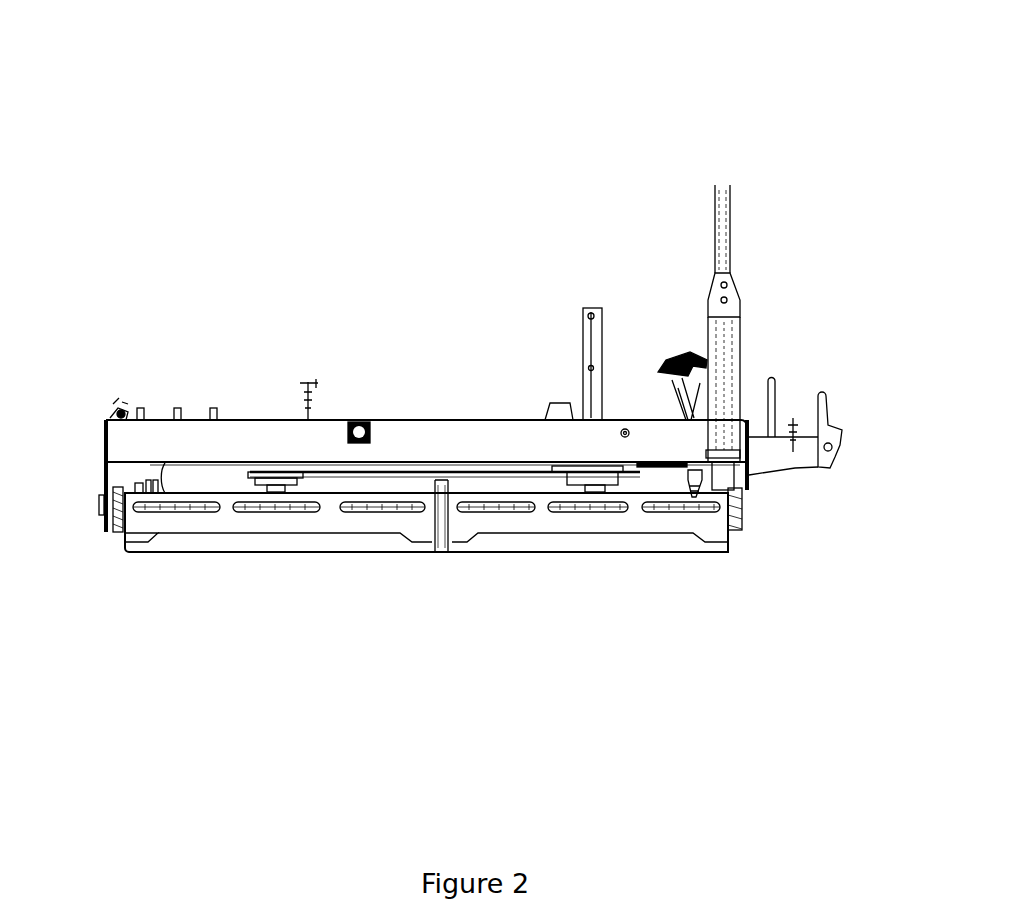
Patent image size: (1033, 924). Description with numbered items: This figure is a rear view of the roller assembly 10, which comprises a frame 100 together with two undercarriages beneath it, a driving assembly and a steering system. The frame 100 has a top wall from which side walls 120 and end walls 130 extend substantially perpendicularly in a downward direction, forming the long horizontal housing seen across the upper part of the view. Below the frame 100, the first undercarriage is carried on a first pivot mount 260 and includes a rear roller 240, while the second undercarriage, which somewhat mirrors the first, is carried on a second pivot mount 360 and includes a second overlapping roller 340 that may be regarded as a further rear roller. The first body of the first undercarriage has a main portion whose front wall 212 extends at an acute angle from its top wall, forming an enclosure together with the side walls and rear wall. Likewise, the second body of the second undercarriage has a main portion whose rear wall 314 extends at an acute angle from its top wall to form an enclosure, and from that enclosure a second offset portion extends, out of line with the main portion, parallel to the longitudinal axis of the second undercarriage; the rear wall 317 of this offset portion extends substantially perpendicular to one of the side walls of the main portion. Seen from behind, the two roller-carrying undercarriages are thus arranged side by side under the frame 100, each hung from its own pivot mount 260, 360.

The roller assembly 10 is at (680, 75).
The frame 100 is at (245, 268).
The end walls 130 is at (133, 440).
The side walls 120 is at (105, 460).
The second pivot mount 360 is at (305, 487).
The first pivot mount 260 is at (590, 487).
The rear wall 314 is at (137, 530).
The second overlapping roller 340 is at (232, 540).
The rear wall 317 is at (415, 528).
The rear roller 240 is at (593, 543).
The front wall 212 is at (673, 515).